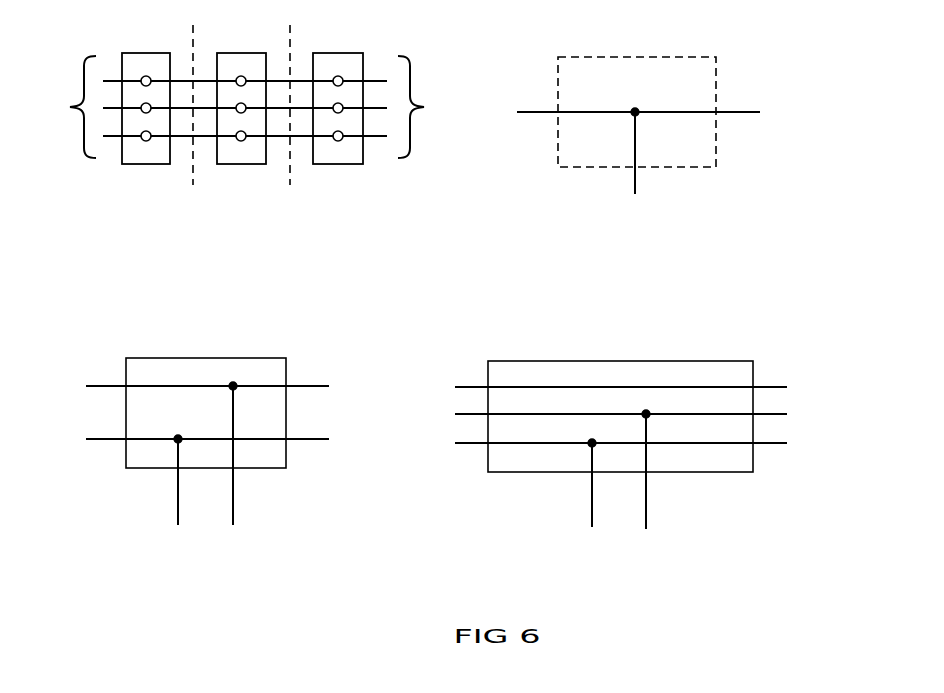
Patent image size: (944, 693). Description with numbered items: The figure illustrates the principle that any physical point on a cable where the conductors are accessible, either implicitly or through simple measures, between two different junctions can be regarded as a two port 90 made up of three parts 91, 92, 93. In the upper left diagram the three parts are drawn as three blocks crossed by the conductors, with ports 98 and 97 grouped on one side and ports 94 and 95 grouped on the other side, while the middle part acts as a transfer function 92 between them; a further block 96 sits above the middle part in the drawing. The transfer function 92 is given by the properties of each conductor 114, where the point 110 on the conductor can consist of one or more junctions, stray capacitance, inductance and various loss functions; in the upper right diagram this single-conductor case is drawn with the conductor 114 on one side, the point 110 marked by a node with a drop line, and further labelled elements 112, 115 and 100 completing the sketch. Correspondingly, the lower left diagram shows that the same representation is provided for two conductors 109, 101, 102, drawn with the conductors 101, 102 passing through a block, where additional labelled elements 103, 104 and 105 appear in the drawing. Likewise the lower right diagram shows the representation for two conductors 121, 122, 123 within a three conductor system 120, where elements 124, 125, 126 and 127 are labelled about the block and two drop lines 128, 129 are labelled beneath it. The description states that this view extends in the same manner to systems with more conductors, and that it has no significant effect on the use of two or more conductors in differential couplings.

The two port 90 is at (235, 125).
The part 91 is at (143, 170).
The transfer function 92 is at (238, 170).
The part 93 is at (342, 170).
The port 94 is at (420, 126).
The port 95 is at (340, 54).
The second contact column 96 is at (245, 54).
The port 97 is at (140, 54).
The port 98 is at (62, 117).
The single-connection circuit 100 is at (658, 140).
The point 110 is at (635, 106).
The right line segment 112 is at (748, 117).
The conductor 114 is at (530, 117).
The dashed boundary region 115 is at (705, 168).
The two conductors 109 is at (211, 441).
The conductor 101 is at (81, 383).
The conductor 102 is at (90, 444).
The circuit block 103 is at (150, 455).
The lower right line segment 104 is at (323, 444).
The upper right line segment 105 is at (320, 383).
The three conductor system 120 is at (614, 432).
The conductor 121 is at (463, 445).
The conductor 122 is at (446, 413).
The conductor 123 is at (460, 383).
The lower right line segment 124 is at (785, 450).
The middle right line segment 125 is at (767, 420).
The upper right line segment 126 is at (778, 388).
The circuit block 127 is at (645, 359).
The first drop line 128 is at (583, 508).
The second drop line 129 is at (655, 508).